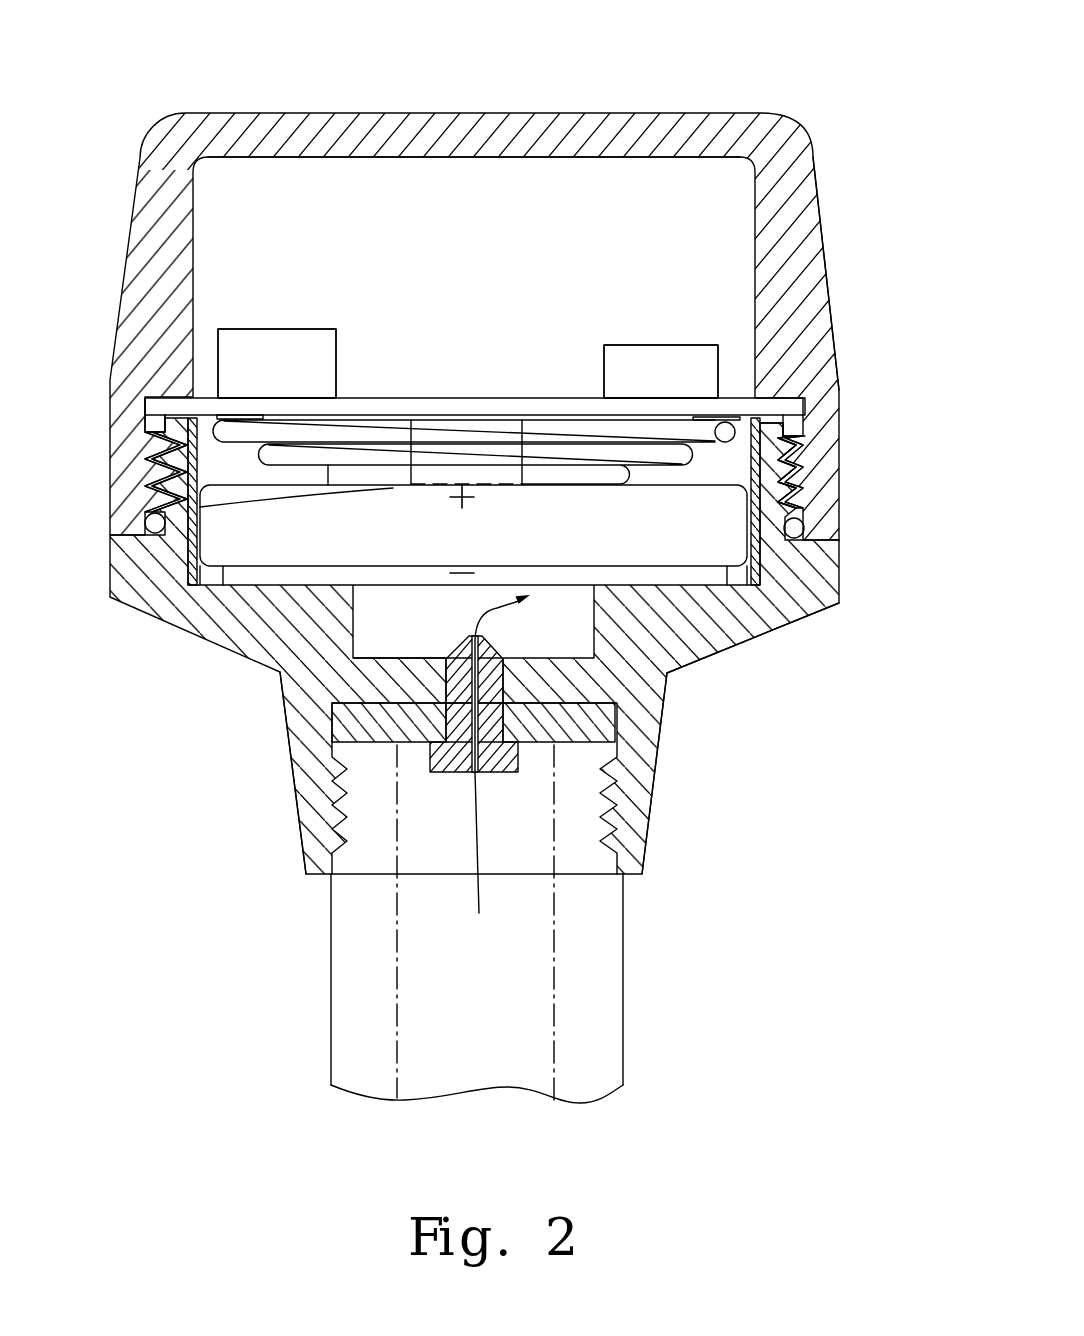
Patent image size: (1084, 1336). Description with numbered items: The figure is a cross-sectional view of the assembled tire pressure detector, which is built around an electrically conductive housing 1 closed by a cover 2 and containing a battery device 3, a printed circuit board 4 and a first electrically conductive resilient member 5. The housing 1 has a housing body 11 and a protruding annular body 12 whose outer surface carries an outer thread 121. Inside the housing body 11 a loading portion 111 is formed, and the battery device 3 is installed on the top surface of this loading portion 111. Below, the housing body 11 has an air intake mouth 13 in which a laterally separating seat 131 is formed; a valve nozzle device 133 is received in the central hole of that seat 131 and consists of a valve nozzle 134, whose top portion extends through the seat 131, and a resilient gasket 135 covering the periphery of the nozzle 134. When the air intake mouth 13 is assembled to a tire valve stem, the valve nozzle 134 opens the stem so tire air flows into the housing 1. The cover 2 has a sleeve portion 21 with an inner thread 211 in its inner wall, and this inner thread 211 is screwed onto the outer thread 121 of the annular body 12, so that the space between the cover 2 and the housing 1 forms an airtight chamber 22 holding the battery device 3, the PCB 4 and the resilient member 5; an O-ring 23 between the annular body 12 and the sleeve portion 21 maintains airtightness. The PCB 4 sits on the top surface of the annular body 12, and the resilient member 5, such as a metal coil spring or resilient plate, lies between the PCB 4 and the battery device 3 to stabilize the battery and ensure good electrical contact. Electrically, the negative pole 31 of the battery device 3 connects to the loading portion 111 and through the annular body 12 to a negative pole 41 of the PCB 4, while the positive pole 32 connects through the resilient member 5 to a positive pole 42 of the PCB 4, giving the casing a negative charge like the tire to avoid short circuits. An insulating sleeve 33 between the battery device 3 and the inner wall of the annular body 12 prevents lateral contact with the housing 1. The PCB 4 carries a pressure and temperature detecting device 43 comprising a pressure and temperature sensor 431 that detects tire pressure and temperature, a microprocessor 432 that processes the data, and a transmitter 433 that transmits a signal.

The electrically conductive housing 1 is at (838, 620).
The housing body 11 is at (707, 650).
The loading portion 111 is at (703, 592).
The protruding annular body 12 is at (792, 430).
The outer thread 121 is at (800, 468).
The air intake mouth 13 is at (653, 768).
The laterally separating seat 131 is at (370, 677).
The valve nozzle device 133 is at (406, 779).
The valve nozzle 134 is at (453, 772).
The resilient gasket 135 is at (370, 732).
The cover 2 is at (718, 104).
The sleeve portion 21 is at (783, 212).
The inner thread 211 is at (854, 472).
The airtight chamber 22 is at (522, 182).
The O-ring 23 is at (806, 528).
The battery device 3 is at (253, 538).
The negative pole 31 is at (407, 683).
The positive pole 32 is at (150, 521).
The insulating sleeve 33 is at (165, 462).
The printed circuit board 4 is at (737, 385).
The negative pole 41 is at (178, 400).
The positive pole 42 is at (240, 410).
The pressure and temperature detecting device 43 is at (623, 322).
The pressure and temperature sensor 431 is at (500, 427).
The microprocessor 432 is at (287, 343).
The transmitter 433 is at (678, 363).
The first electrically conductive resilient member 5 is at (558, 444).